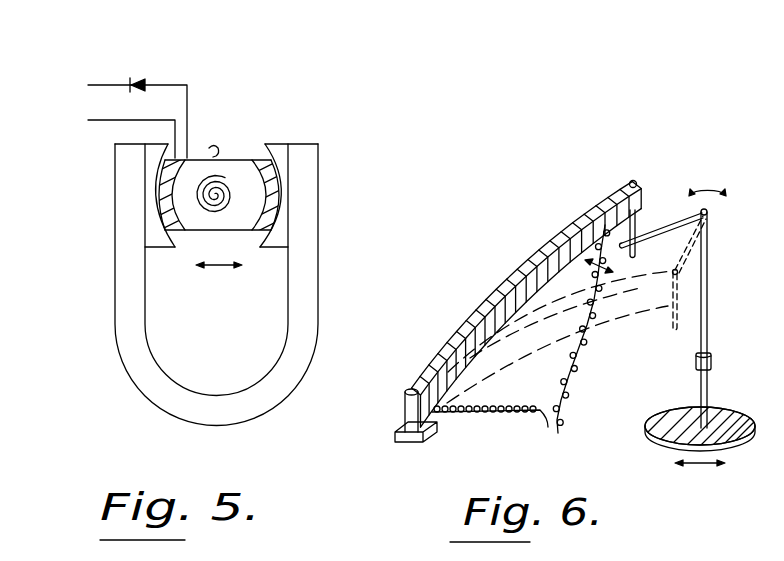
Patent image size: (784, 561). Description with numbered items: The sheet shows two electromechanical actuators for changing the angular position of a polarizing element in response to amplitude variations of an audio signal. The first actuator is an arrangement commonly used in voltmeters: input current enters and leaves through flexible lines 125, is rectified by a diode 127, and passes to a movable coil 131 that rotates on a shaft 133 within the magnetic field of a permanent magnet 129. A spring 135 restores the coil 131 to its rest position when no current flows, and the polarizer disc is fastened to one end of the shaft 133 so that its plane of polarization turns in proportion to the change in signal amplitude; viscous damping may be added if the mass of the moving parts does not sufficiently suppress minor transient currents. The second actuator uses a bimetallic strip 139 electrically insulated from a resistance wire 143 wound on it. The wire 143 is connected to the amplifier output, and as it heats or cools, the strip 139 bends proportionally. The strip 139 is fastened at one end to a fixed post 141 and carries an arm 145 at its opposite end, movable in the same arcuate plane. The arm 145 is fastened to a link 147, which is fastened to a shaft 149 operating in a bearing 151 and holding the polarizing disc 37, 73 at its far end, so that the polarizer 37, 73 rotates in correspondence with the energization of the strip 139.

In FIG. 5, the flexible lines 125 is at (108, 120).
In FIG. 5, the diode 127 is at (140, 83).
In FIG. 5, the permanent magnet 129 is at (313, 196).
In FIG. 5, the movable coil 131 is at (225, 178).
In FIG. 5, the shaft 133 is at (212, 207).
In FIG. 5, the spring 135 is at (198, 192).
In FIG. 6, the bimetallic strip 139 is at (617, 202).
In FIG. 6, the post 141 is at (406, 408).
In FIG. 6, the resistance wire 143 is at (570, 368).
In FIG. 6, the arm 145 is at (636, 222).
In FIG. 6, the link 147 is at (672, 232).
In FIG. 6, the shaft 149 is at (709, 297).
In FIG. 6, the bearing 151 is at (711, 358).
In FIG. 6, the polarizer 37 is at (745, 430).
In FIG. 6, the polarizer 73 is at (745, 430).